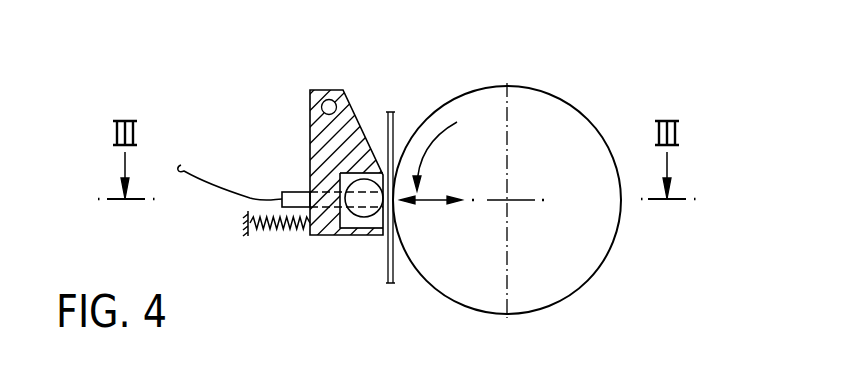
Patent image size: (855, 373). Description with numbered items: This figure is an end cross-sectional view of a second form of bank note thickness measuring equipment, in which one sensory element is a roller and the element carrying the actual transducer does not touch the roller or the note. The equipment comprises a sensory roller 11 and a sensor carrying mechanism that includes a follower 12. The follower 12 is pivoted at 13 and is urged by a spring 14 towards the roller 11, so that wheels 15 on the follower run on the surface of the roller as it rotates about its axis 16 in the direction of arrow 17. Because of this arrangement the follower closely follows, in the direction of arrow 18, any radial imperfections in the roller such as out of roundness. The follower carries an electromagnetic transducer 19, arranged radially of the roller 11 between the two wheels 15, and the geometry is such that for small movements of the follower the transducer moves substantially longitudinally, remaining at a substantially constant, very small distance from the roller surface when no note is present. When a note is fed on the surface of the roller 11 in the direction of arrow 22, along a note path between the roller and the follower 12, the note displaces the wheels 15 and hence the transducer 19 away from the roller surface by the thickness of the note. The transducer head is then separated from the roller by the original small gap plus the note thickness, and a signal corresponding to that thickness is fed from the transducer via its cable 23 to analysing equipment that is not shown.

The sensory roller 11 is at (446, 99).
The follower 12 is at (310, 157).
The pivot 13 is at (328, 99).
The spring 14 is at (277, 236).
The wheels 15 is at (372, 237).
The axis 16 is at (509, 198).
The arrow 17 is at (432, 148).
The arrow 18 is at (430, 203).
The electromagnetic transducer 19 is at (350, 238).
The arrow 22 is at (390, 98).
The cable 23 is at (203, 182).